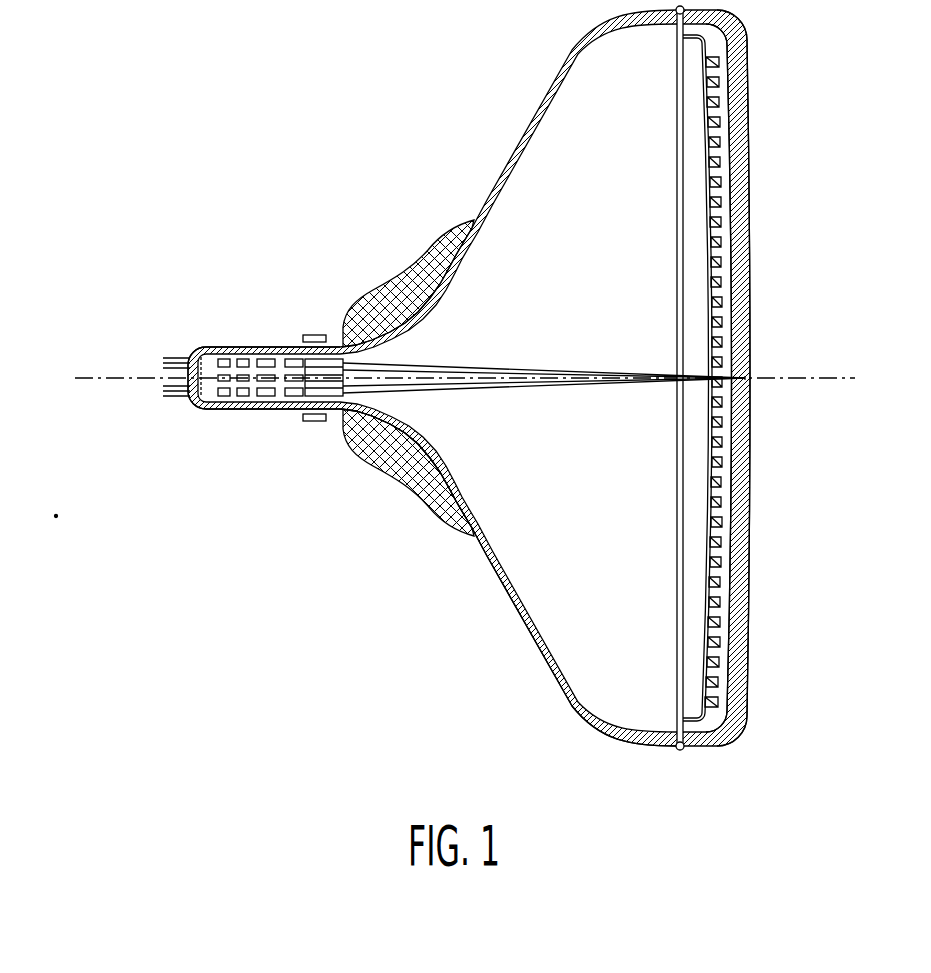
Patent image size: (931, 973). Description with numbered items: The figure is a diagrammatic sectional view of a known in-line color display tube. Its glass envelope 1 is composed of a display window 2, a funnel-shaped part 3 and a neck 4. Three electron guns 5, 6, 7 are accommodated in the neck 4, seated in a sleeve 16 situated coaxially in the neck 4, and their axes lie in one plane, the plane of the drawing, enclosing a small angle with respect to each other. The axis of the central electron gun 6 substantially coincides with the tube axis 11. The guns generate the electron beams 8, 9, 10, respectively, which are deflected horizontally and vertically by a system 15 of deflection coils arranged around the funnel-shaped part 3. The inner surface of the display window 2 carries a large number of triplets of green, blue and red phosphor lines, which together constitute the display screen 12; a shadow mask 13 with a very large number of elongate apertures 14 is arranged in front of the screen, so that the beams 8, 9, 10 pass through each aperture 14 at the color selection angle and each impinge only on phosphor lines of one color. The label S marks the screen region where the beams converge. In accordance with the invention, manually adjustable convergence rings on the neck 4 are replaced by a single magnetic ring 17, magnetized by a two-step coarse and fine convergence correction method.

The glass envelope 1 is at (570, 70).
The display window 2 is at (751, 600).
The funnel-shaped part 3 is at (550, 662).
The neck 4 is at (212, 410).
The electron gun 5 is at (258, 358).
The central electron gun 6 is at (217, 373).
The electron gun 7 is at (263, 398).
The electron beam 8 is at (467, 364).
The electron beam 9 is at (533, 386).
The electron beam 10 is at (468, 392).
The tube axis 11 is at (123, 372).
The display screen 12 is at (738, 512).
The colour selection electrode (shadow mask) 13 is at (708, 490).
The elongate apertures 14 is at (714, 350).
The system of deflection coils 15 is at (460, 217).
The sleeve 16 is at (312, 368).
The magnetic ring 17 is at (307, 425).
The display screen S is at (801, 402).